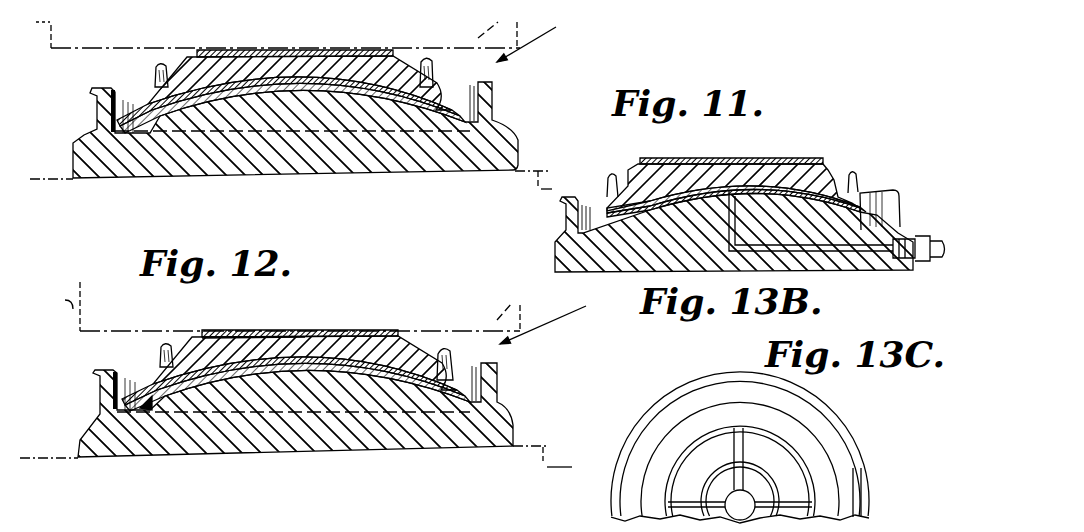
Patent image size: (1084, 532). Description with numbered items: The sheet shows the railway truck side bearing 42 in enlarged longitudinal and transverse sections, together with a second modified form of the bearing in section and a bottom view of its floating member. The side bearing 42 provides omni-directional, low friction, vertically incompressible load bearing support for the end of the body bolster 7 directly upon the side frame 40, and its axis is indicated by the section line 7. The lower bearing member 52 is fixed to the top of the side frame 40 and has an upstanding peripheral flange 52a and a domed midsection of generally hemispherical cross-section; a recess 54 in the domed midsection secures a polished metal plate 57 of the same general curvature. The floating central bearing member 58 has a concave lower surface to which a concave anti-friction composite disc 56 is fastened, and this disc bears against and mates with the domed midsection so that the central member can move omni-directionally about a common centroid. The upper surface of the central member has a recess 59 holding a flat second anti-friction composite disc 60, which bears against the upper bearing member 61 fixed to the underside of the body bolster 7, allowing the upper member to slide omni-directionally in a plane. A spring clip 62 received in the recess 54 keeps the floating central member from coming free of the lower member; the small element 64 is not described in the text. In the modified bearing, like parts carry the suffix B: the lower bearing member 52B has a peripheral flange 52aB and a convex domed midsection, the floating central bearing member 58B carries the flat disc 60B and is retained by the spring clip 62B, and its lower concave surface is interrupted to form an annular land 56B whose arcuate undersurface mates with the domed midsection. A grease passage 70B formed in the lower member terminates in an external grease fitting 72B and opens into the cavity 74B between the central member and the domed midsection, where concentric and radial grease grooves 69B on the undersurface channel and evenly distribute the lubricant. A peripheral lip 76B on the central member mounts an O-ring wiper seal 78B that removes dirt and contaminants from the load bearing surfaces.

In FIG. 11, the body bolster 7 is at (270, 31).
In FIG. 12, the body bolster 7 is at (285, 306).
In FIG. 11, the side frame 40 is at (303, 187).
In FIG. 12, the side frame 40 is at (310, 463).
In FIG. 11, the side bearing 42 is at (537, 38).
In FIG. 12, the side bearing 42 is at (556, 321).
In FIG. 11, the lower bearing member 52 is at (514, 130).
In FIG. 12, the lower bearing member 52 is at (309, 410).
In FIG. 11, the upstanding peripheral flange 52a is at (507, 78).
In FIG. 12, the upstanding peripheral flange 52a is at (517, 373).
In FIG. 11, the recess 54 is at (160, 117).
In FIG. 12, the recess 54 is at (159, 442).
In FIG. 11, the anti-friction composite disc 56 is at (277, 57).
In FIG. 12, the anti-friction composite disc 56 is at (293, 350).
In FIG. 11, the polished metal plate 57 is at (318, 96).
In FIG. 12, the polished metal plate 57 is at (297, 427).
In FIG. 11, the floating central bearing member 58 is at (188, 68).
In FIG. 12, the floating central bearing member 58 is at (303, 349).
In FIG. 12, the recess 59 is at (253, 311).
In FIG. 11, the second anti-friction composite disc 60 is at (340, 50).
In FIG. 12, the second anti-friction composite disc 60 is at (300, 314).
In FIG. 11, the upper bearing member 61 is at (505, 24).
In FIG. 12, the upper bearing member 61 is at (522, 306).
In FIG. 11, the spring clip 62 is at (155, 68).
In FIG. 12, the spring clip 62 is at (308, 338).
In FIG. 12, the sealing ring 64 is at (120, 372).
In FIG. 13B, the lower bearing member 52B is at (572, 249).
In FIG. 13B, the upstanding peripheral flange 52aB is at (562, 205).
In FIG. 13B, the annular land 56B is at (708, 191).
In FIG. 13C, the annular land 56B is at (680, 435).
In FIG. 13B, the floating central bearing member 58B is at (830, 163).
In FIG. 13C, the floating central bearing member 58B is at (695, 380).
In FIG. 13B, the anti-friction composite disc 60B is at (779, 148).
In FIG. 13B, the spring clip 62B is at (617, 172).
In FIG. 13C, the grease grooves 69B is at (743, 427).
In FIG. 13B, the grease passage 70B is at (858, 252).
In FIG. 13B, the grease fitting 72B is at (917, 262).
In FIG. 13B, the cavity 74B is at (733, 199).
In FIG. 13B, the peripheral lip 76B is at (856, 187).
In FIG. 13B, the O-ring wiper seal 78B is at (848, 205).
In FIG. 13C, the O-ring wiper seal 78B is at (855, 473).